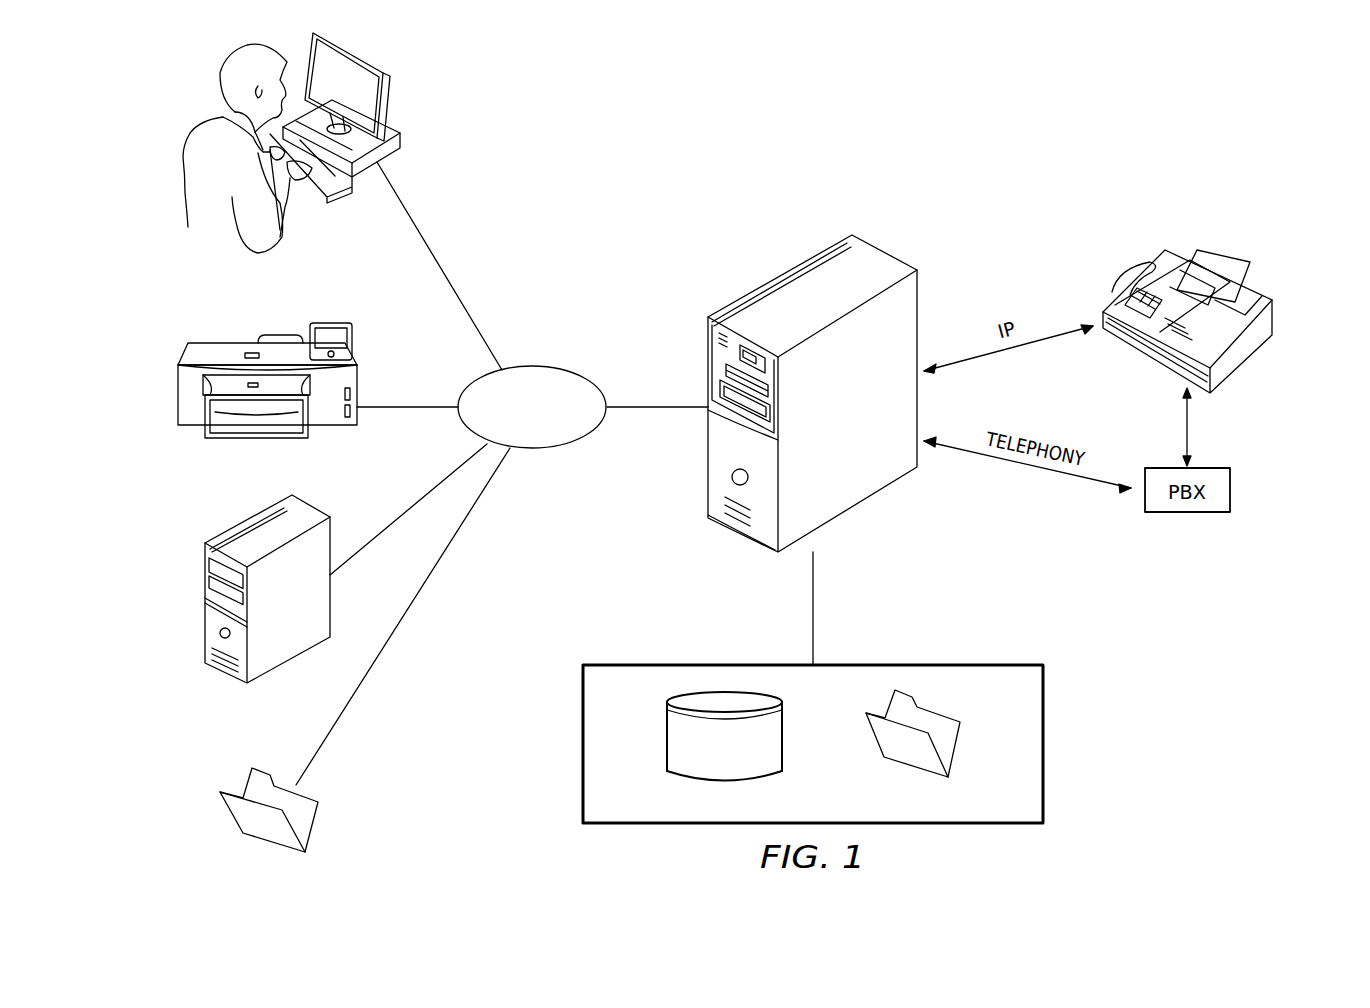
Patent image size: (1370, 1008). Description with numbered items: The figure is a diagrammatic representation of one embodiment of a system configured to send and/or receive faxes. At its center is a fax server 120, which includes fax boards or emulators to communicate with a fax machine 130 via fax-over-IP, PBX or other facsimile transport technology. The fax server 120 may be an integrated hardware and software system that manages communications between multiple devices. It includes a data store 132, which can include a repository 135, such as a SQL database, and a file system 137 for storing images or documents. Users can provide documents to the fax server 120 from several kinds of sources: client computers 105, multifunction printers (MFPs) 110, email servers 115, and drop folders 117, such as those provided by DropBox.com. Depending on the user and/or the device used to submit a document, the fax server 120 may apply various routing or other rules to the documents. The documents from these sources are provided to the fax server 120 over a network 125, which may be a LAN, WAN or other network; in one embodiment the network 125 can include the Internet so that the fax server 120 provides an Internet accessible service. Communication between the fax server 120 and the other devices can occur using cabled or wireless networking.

The client computer 105 is at (190, 150).
The multifunction printer (MFP) 110 is at (178, 383).
The email server 115 is at (205, 619).
The drop folder 117 is at (230, 818).
The fax server 120 is at (763, 284).
The network 125 is at (551, 421).
The fax machine 130 is at (1272, 313).
The data store 132 is at (1044, 773).
The repository 135 is at (667, 744).
The file system 137 is at (955, 747).